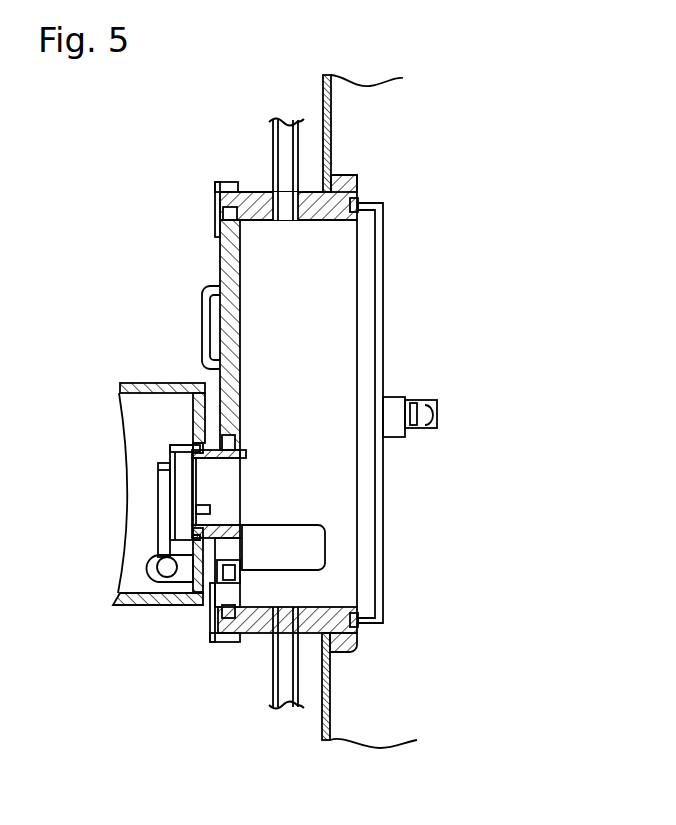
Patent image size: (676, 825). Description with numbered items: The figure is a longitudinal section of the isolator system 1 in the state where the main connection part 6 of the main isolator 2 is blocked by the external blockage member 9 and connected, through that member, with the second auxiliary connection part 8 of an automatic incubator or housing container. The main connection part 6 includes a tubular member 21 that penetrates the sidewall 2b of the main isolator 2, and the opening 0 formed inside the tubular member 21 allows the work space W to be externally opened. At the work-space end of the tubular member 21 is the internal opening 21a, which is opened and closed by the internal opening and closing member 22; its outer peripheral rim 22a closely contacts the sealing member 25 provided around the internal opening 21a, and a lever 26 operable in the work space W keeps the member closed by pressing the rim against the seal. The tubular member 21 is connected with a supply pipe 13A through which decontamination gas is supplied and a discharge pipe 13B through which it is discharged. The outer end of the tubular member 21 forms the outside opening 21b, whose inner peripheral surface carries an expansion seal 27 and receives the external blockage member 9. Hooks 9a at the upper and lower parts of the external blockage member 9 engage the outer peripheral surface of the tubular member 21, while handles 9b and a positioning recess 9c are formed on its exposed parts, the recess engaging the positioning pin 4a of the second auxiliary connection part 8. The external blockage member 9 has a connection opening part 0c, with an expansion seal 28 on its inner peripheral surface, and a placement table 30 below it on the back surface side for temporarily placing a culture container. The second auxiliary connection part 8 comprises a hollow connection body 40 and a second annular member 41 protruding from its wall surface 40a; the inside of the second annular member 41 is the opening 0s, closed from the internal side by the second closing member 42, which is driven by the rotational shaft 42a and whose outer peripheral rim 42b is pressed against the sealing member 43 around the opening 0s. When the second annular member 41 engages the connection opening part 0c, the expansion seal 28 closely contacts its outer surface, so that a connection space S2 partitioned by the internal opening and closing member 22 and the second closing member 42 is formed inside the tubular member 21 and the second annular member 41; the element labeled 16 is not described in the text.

The isolator system 1 is at (483, 156).
The main isolator 2 is at (384, 113).
The sidewall 2b is at (332, 688).
The positioning pin 4a is at (193, 597).
The main connection part 6 is at (247, 179).
The second auxiliary connection part 8 is at (146, 360).
The external blockage member 9 is at (215, 249).
The hooks 9a is at (213, 188).
The handles 9b is at (203, 302).
The positioning recess 9c is at (240, 580).
The supply pipe 13A is at (272, 147).
The discharge pipe 13B is at (273, 683).
The support plate 16 is at (234, 468).
The tubular member 21 is at (357, 180).
The internal opening 21a is at (350, 228).
The outside opening 21b is at (243, 223).
The internal opening and closing member 22 is at (384, 510).
The outer peripheral rim 22a is at (368, 205).
The sealing member 25 is at (358, 640).
The lever 26 is at (400, 397).
The expansion seal 27 is at (222, 213).
The expansion seal 28 is at (230, 435).
The placement table 30 is at (291, 535).
The connection body 40 is at (123, 381).
The wall surface 40a is at (196, 415).
The second annular member 41 is at (225, 527).
The second closing member 42 is at (168, 478).
The rotational shaft 42a is at (155, 565).
The outer peripheral rim 42b is at (184, 450).
The sealing member 43 is at (190, 452).
The opening 0 is at (350, 602).
The connection opening part 0c is at (243, 457).
The opening 0s is at (210, 514).
The connection space S2 is at (329, 350).
The work space W is at (542, 418).